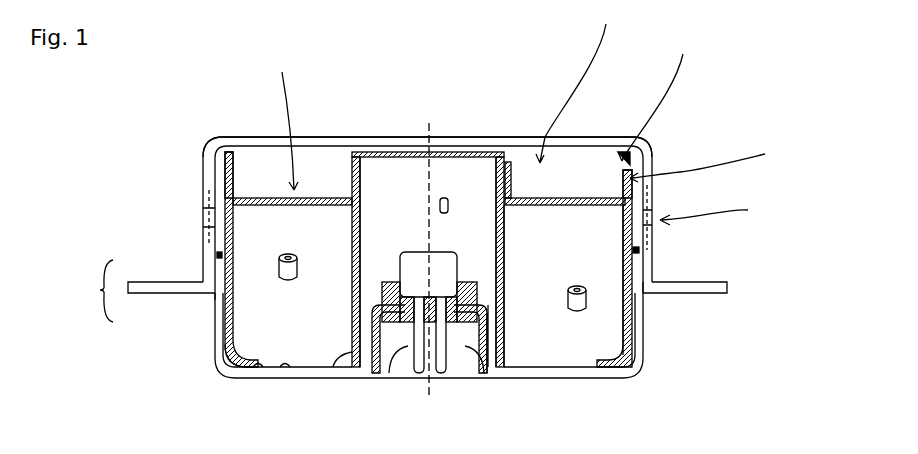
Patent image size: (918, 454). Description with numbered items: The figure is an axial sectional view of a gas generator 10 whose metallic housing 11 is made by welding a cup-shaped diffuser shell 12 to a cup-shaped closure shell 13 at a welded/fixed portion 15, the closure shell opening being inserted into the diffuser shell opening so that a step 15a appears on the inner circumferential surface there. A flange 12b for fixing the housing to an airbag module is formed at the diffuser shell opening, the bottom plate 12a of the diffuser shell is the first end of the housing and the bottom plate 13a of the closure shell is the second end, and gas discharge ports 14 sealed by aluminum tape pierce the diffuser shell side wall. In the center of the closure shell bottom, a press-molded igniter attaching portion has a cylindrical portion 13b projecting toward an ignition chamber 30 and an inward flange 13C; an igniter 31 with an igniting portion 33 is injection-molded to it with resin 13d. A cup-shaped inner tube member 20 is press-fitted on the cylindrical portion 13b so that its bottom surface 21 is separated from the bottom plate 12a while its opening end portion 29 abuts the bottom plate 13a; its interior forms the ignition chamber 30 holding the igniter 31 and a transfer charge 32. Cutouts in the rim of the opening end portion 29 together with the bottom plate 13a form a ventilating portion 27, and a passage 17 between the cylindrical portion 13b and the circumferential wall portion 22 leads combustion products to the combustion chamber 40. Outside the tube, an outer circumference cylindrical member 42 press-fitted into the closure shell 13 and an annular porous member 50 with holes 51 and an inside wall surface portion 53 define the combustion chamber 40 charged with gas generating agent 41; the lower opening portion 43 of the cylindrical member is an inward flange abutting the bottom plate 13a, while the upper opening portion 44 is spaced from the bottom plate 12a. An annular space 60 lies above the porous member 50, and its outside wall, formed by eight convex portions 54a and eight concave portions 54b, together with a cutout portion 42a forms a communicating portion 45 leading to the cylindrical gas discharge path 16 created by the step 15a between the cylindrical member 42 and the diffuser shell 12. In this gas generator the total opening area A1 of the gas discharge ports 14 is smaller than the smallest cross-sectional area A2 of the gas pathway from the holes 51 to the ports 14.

The gas generator 10 is at (497, 137).
The housing 11 is at (99, 291).
The diffuser shell 12 is at (205, 268).
The bottom plate of the diffuser shell 12a is at (335, 137).
The flange 12b is at (688, 290).
The closure shell 13 is at (218, 303).
The bottom plate of the closure shell 13a is at (288, 370).
The cylindrical portion 13b is at (366, 373).
The inward flange 13C is at (450, 373).
The resin 13d is at (398, 373).
The gas discharge ports 14 is at (208, 218).
The welded/fixed portion 15 is at (645, 293).
The step 15a is at (642, 243).
The cylindrical gas discharge path 16 is at (640, 152).
The passage 17 is at (477, 373).
The inner tube member 20 is at (507, 262).
The bottom surface of the inner tube member 21 is at (388, 137).
The circumferential wall portion 22 is at (503, 321).
The ventilating portion 27 is at (350, 355).
The opening end portion 29 is at (508, 365).
The ignition chamber 30 is at (406, 199).
The igniter 31 is at (438, 252).
The transfer charge 32 is at (447, 197).
The igniting portion 33 is at (393, 254).
The combustion chamber 40 is at (580, 349).
The gas generating agent 41 is at (578, 285).
The outer circumference cylindrical member 42 is at (241, 311).
The cutout portion 42a is at (632, 150).
The opening portion 43 is at (250, 360).
The opening portion 44 is at (227, 140).
The communicating portion 45 is at (620, 150).
The annular porous member 50 is at (280, 208).
The holes 51 is at (563, 204).
The first annular inside wall surface portion 53 is at (513, 170).
The convex portions 54a is at (240, 176).
The concave portions 54b is at (622, 170).
The annular space 60 is at (326, 188).
The total opening area of the gas discharge ports A1 is at (716, 213).
The smallest cross-sectional area of the gas pathway A2 is at (527, 97).